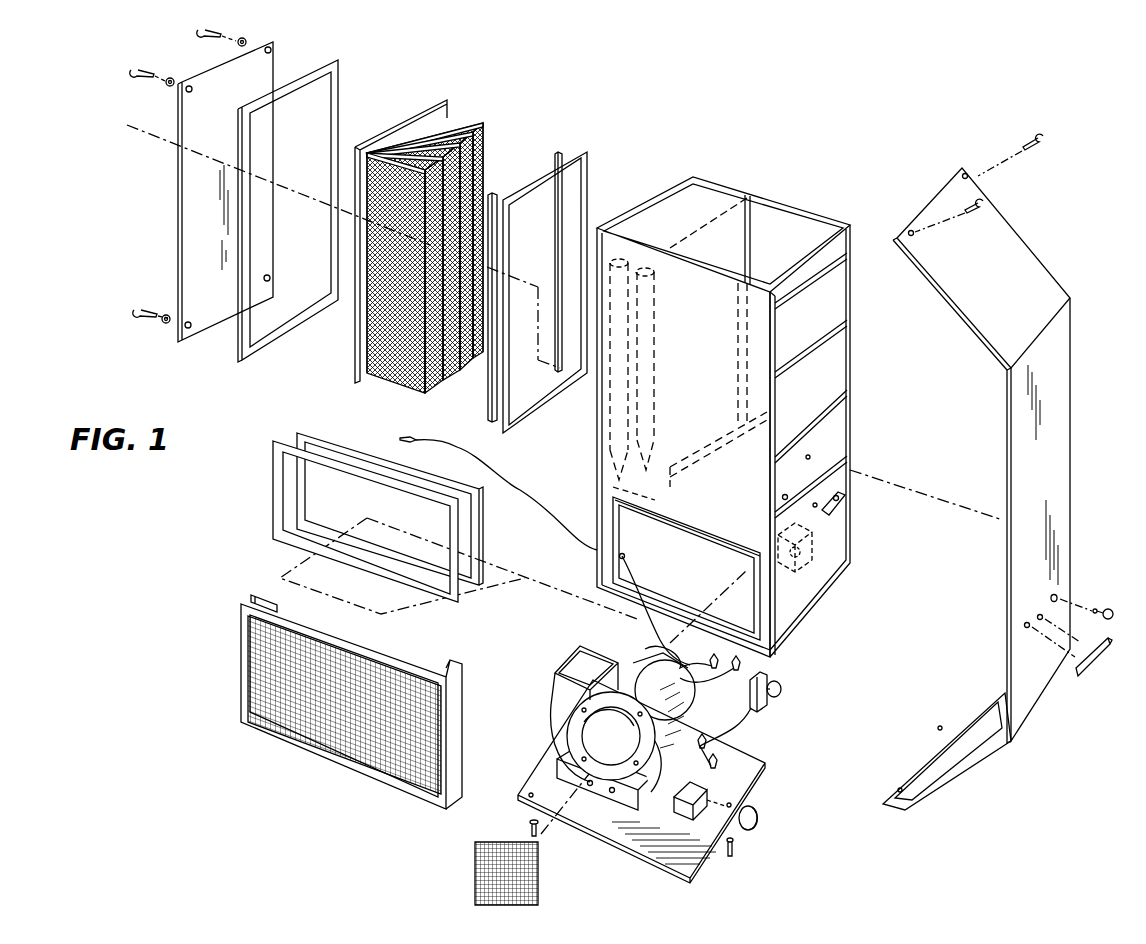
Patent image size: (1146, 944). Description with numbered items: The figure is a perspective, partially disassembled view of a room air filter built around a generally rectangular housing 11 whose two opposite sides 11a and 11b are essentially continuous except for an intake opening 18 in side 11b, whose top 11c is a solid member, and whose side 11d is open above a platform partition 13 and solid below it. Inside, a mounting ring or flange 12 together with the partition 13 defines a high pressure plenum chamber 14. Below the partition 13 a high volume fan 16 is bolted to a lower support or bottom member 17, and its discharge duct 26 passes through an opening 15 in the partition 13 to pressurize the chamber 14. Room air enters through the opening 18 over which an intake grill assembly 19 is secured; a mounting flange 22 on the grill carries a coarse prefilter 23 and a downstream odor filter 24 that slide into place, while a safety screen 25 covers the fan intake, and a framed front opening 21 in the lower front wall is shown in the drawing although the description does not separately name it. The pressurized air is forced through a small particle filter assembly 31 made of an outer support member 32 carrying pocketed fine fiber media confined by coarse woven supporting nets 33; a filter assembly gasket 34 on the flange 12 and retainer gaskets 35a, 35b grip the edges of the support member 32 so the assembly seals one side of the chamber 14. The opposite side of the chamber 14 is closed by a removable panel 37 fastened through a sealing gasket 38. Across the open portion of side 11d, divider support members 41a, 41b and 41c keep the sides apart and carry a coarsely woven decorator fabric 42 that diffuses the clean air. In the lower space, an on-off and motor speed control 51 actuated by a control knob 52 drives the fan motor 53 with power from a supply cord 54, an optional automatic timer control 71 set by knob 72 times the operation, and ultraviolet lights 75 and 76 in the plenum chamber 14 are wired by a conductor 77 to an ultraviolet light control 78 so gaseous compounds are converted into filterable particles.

The housing 11 is at (737, 388).
The side of housing 11a is at (790, 200).
The side of housing 11b is at (613, 428).
The top of housing 11c is at (668, 200).
The side of housing 11d is at (835, 369).
The mounting ring or flange 12 is at (748, 236).
The platform partition 13 is at (815, 458).
The high pressure plenum chamber 14 is at (708, 343).
The opening in partition 15 is at (690, 438).
The high volume fan 16 is at (632, 725).
The lower support or bottom member 17 is at (704, 851).
The intake opening 18 is at (760, 575).
The intake grill assembly 19 is at (369, 758).
The front opening 21 is at (673, 607).
The mounting flange 22 is at (375, 711).
The coarse prefilter 23 is at (272, 452).
The odor filter 24 is at (345, 437).
The safety screen 25 is at (538, 878).
The discharge duct 26 is at (560, 656).
The small particle filter assembly 31 is at (385, 223).
The outer support member 32 is at (393, 128).
The coarse woven supporting net 33 is at (373, 357).
The filter assembly gasket 34 is at (590, 175).
The retainer gasket 35a is at (557, 150).
The retainer gasket 35b is at (493, 193).
The removable panel 37 is at (178, 212).
The sealing gasket 38 is at (238, 338).
The divider support member 41a is at (818, 259).
The divider support member 41b is at (820, 337).
The divider support member 41c is at (832, 405).
The decorator fabric 42 is at (1050, 378).
The on-off and motor speed control 51 is at (845, 500).
The control knob 52 is at (783, 689).
The fan motor 53 is at (648, 660).
The power supply cord 54 is at (457, 447).
The automatic timer control 71 is at (710, 796).
The timer control knob 72 is at (762, 818).
The ultraviolet light 75 is at (618, 262).
The ultraviolet light 76 is at (652, 278).
The conductor 77 is at (690, 540).
The ultraviolet light control 78 is at (805, 570).